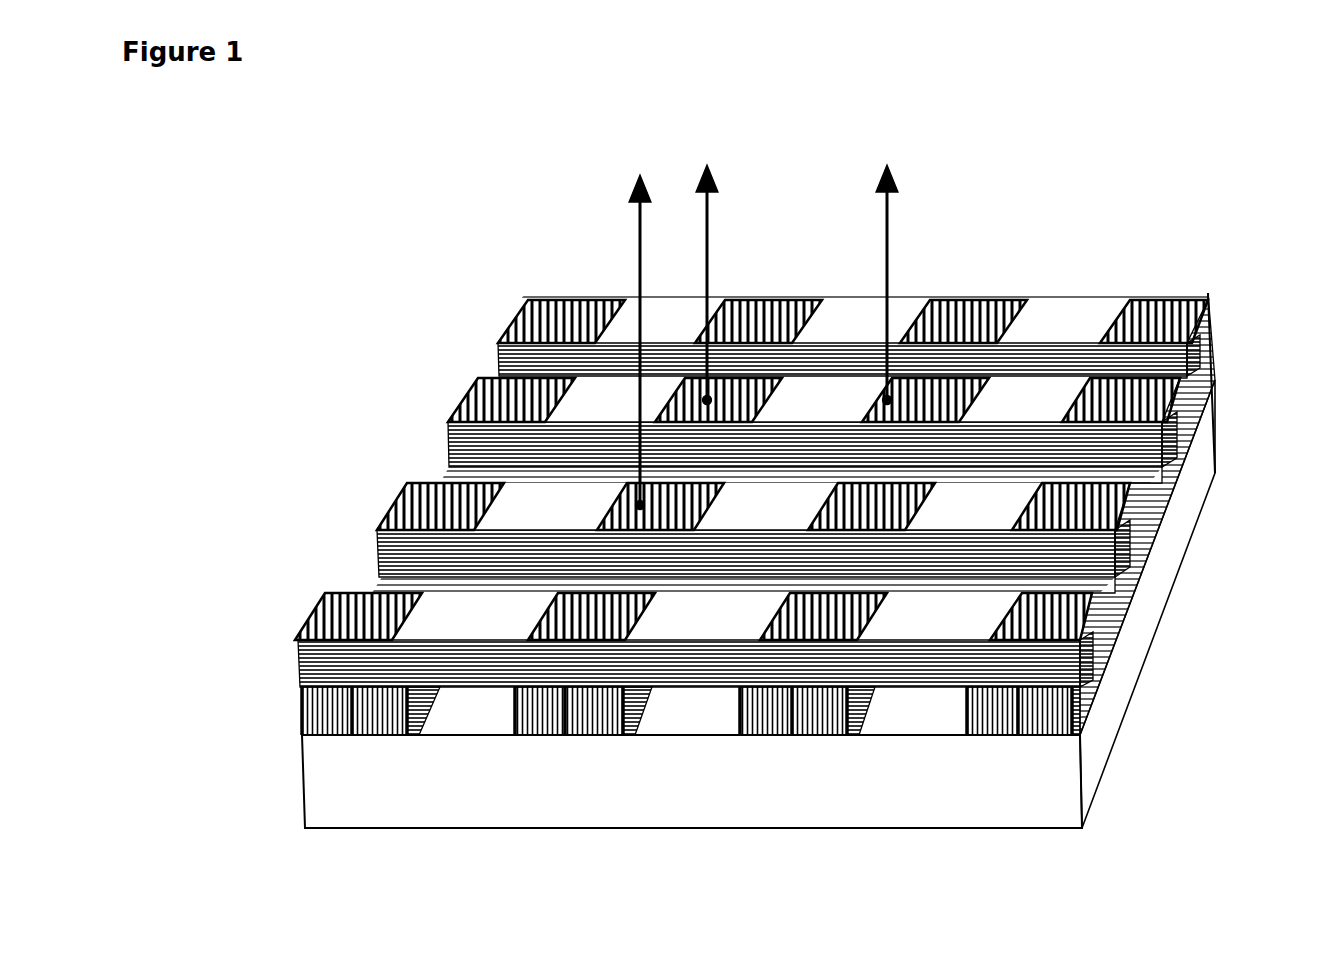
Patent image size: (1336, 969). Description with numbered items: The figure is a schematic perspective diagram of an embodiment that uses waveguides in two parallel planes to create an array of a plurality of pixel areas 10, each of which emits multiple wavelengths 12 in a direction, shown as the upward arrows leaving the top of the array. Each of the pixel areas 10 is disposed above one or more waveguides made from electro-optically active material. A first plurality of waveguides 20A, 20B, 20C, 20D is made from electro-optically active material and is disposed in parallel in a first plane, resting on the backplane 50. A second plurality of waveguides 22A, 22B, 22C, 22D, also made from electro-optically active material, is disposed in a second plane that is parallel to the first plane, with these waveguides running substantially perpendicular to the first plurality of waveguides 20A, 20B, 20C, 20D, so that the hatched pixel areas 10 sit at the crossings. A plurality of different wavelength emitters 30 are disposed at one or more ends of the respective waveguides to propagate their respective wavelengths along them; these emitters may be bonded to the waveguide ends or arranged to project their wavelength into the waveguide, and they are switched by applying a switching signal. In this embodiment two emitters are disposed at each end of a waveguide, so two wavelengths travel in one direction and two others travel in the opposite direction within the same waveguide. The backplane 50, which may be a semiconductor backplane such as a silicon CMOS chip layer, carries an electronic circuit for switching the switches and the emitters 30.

The pixel areas 10 is at (1055, 256).
The multiple wavelengths 12 is at (762, 324).
The waveguide of the first plurality 20A is at (429, 720).
The waveguide of the first plurality 20B is at (644, 720).
The waveguide of the first plurality 20C is at (865, 720).
The waveguide of the first plurality 20D is at (1217, 361).
The waveguide of the second plurality 22A is at (296, 661).
The waveguide of the second plurality 22B is at (363, 552).
The waveguide of the second plurality 22C is at (433, 446).
The waveguide of the second plurality 22D is at (487, 360).
The wavelength emitters 30 is at (1140, 615).
The backplane 50 is at (962, 794).